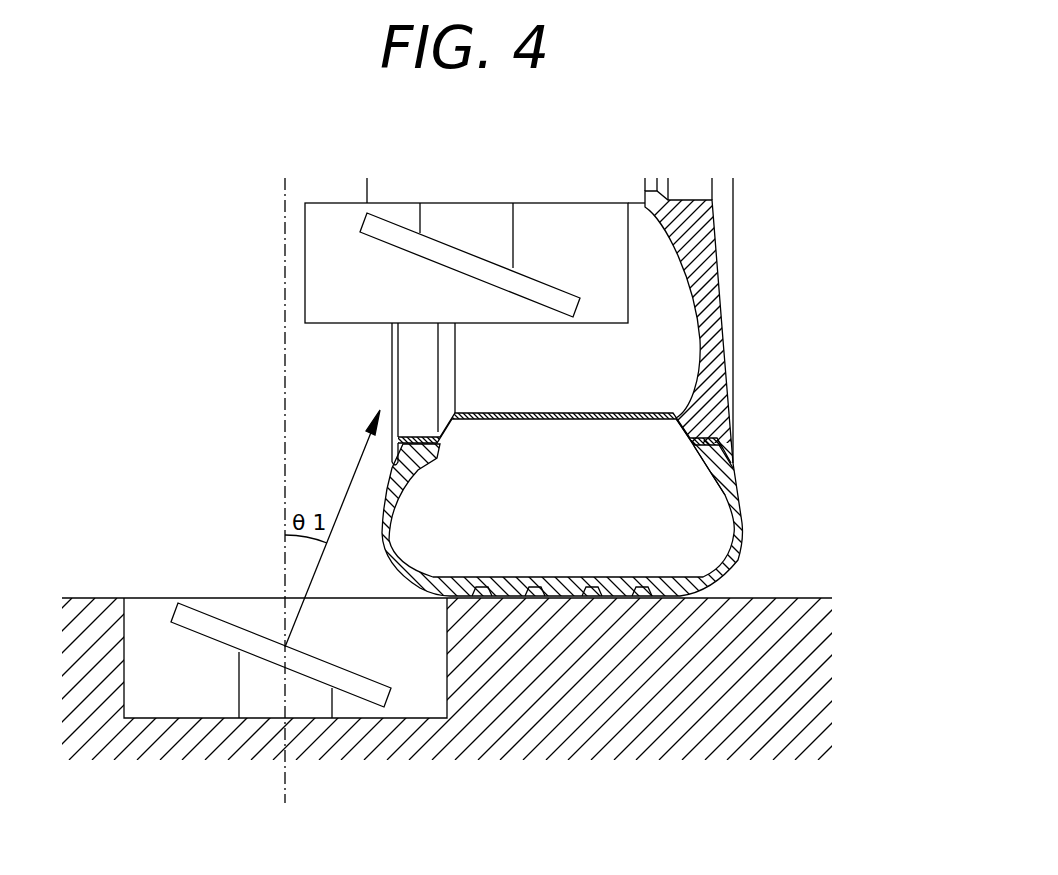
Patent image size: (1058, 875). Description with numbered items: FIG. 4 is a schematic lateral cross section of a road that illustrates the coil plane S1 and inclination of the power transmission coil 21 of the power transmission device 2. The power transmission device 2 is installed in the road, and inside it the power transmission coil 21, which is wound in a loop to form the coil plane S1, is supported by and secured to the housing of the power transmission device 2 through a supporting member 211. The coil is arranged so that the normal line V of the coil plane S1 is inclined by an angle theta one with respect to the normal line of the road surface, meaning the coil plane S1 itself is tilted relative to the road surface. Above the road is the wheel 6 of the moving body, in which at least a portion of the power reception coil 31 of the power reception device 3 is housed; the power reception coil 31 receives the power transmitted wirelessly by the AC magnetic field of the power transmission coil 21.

The power transmission device 2 is at (150, 598).
The power transmission coil 21 is at (343, 680).
The supporting member 211 is at (253, 688).
The power reception device 3 is at (305, 259).
The power reception coil 31 is at (390, 238).
The wheel 6 is at (752, 289).
The coil plane S1 is at (315, 655).
The normal line V is at (356, 469).